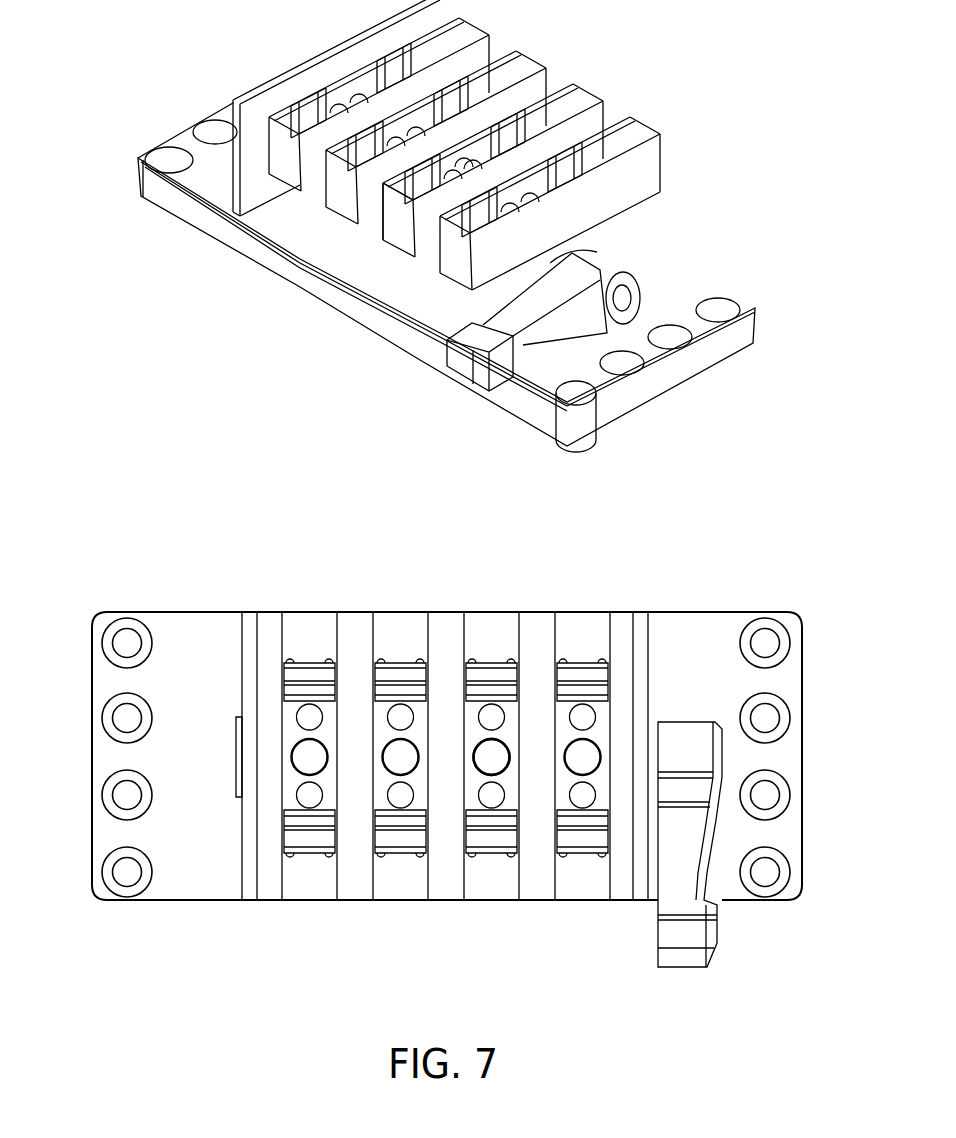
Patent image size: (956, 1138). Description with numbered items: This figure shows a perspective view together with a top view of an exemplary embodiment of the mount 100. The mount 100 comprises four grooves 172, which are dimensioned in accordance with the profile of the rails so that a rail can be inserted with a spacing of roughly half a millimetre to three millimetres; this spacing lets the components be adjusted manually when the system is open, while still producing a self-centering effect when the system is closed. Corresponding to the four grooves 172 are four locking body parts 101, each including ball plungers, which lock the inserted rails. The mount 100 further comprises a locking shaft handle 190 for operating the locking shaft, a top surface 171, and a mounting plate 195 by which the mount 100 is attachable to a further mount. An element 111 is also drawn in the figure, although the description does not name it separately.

The mount 100 is at (435, 483).
The locking body part 101 is at (286, 117).
The terminal screw 111 is at (469, 167).
The top surface 171 is at (248, 115).
The groove 172 is at (372, 207).
The locking shaft handle 190 is at (681, 737).
The mounting plate 195 is at (707, 380).